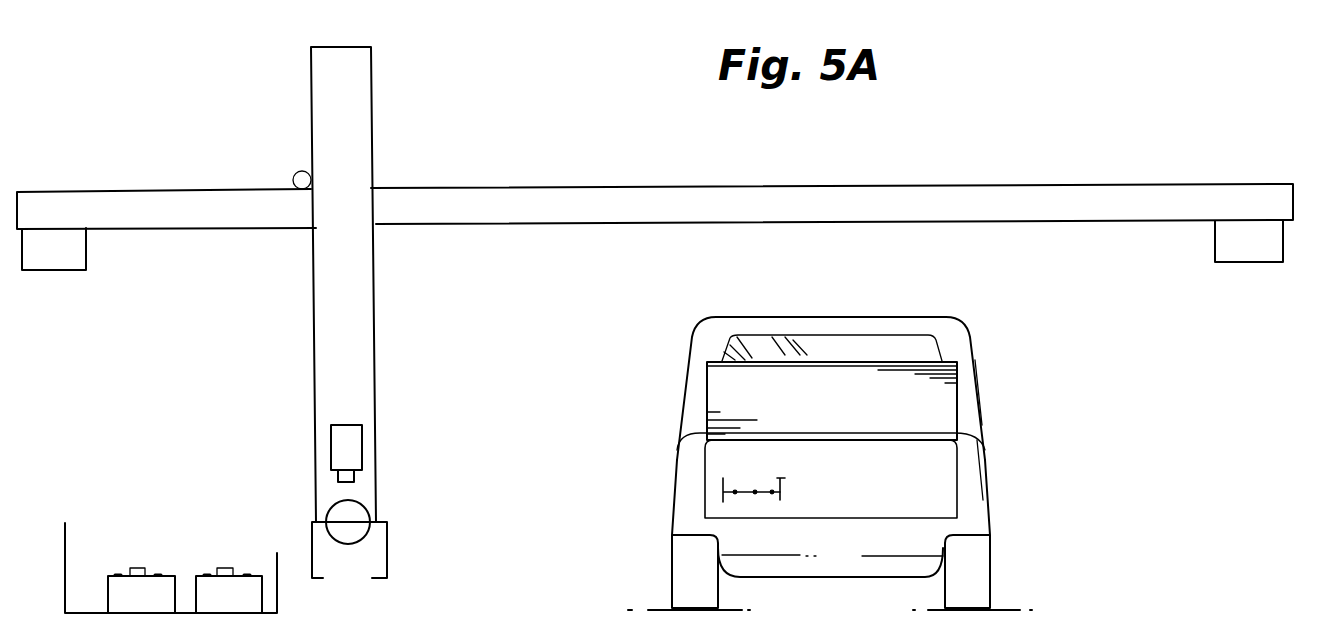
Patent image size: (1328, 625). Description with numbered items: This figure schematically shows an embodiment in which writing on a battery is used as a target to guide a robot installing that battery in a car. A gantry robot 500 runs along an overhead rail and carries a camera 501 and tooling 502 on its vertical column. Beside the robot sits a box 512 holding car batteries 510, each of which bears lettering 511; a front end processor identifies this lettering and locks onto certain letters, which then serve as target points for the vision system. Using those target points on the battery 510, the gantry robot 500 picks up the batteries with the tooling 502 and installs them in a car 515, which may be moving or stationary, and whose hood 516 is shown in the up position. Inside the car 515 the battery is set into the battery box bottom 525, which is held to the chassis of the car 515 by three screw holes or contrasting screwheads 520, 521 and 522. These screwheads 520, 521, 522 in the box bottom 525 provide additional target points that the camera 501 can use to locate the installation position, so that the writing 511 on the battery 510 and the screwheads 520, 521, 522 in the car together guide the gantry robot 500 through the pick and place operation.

The gantry robot 500 is at (372, 118).
The camera 501 is at (350, 445).
The tooling 502 is at (385, 545).
The car battery 510 is at (118, 573).
The lettering 511 is at (247, 573).
The box 512 is at (68, 536).
The car 515 is at (987, 479).
The hood 516 is at (958, 400).
The screw hole or contrasting screwhead 520 is at (735, 492).
The screw hole or contrasting screwhead 521 is at (780, 494).
The screw hole or contrasting screwhead 522 is at (745, 492).
The battery box bottom 525 is at (783, 480).